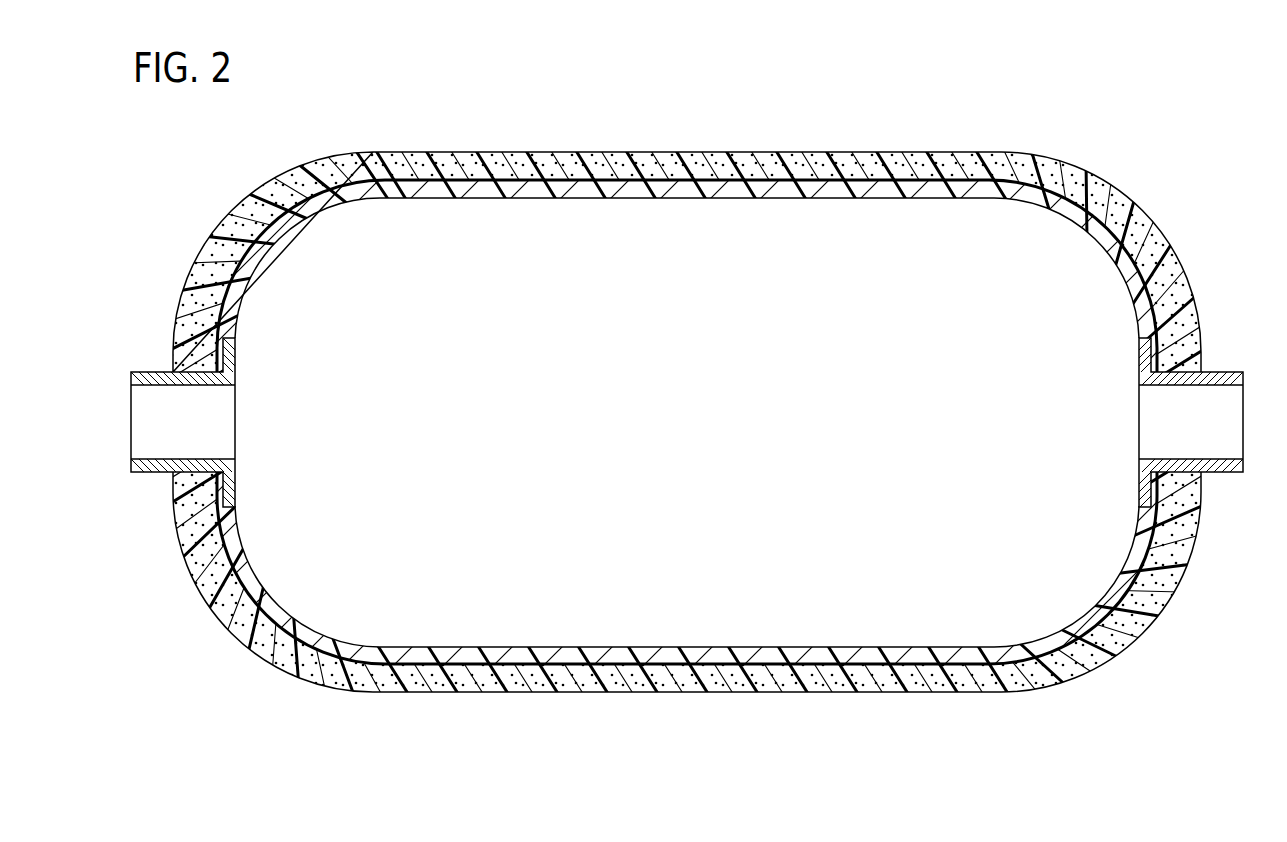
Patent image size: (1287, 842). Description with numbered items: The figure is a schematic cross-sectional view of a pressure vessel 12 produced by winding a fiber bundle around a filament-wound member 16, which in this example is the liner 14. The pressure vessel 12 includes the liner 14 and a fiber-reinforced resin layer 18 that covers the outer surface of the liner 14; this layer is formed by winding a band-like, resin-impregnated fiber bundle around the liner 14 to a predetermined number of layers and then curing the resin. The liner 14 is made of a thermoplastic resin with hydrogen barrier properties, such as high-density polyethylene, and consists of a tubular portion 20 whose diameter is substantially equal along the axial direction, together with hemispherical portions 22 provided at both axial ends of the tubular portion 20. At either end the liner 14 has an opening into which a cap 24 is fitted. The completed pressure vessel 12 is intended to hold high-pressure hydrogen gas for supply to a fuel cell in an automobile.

The pressure vessel 12 is at (1152, 111).
The liner 14 is at (686, 430).
The filament-wound member 16 is at (687, 422).
The fiber-reinforced resin layer 18 is at (683, 684).
The tubular portion 20 is at (566, 190).
The hemispherical portions 22 is at (247, 255).
The cap 24 is at (145, 372).